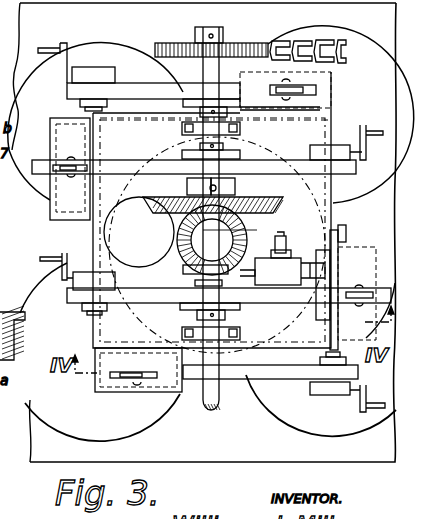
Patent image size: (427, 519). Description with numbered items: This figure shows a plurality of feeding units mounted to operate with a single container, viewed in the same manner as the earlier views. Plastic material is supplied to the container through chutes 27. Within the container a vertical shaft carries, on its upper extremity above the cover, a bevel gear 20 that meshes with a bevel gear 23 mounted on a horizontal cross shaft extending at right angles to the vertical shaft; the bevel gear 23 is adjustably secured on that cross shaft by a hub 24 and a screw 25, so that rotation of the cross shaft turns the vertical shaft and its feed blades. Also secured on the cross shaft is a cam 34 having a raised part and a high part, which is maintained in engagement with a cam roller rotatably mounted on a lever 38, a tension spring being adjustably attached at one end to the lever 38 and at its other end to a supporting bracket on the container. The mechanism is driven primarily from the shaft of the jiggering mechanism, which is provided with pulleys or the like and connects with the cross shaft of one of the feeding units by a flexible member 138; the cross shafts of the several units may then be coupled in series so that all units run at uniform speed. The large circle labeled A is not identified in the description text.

The lever 38 is at (130, 88).
The flexible member 138 is at (328, 55).
The cam 34 is at (245, 147).
The screw 25 is at (176, 187).
The hub 24 is at (235, 188).
The bevel gear 23 is at (275, 182).
The bevel gear 20 is at (243, 226).
The chute 27 is at (139, 232).
The wheel circle A is at (272, 416).